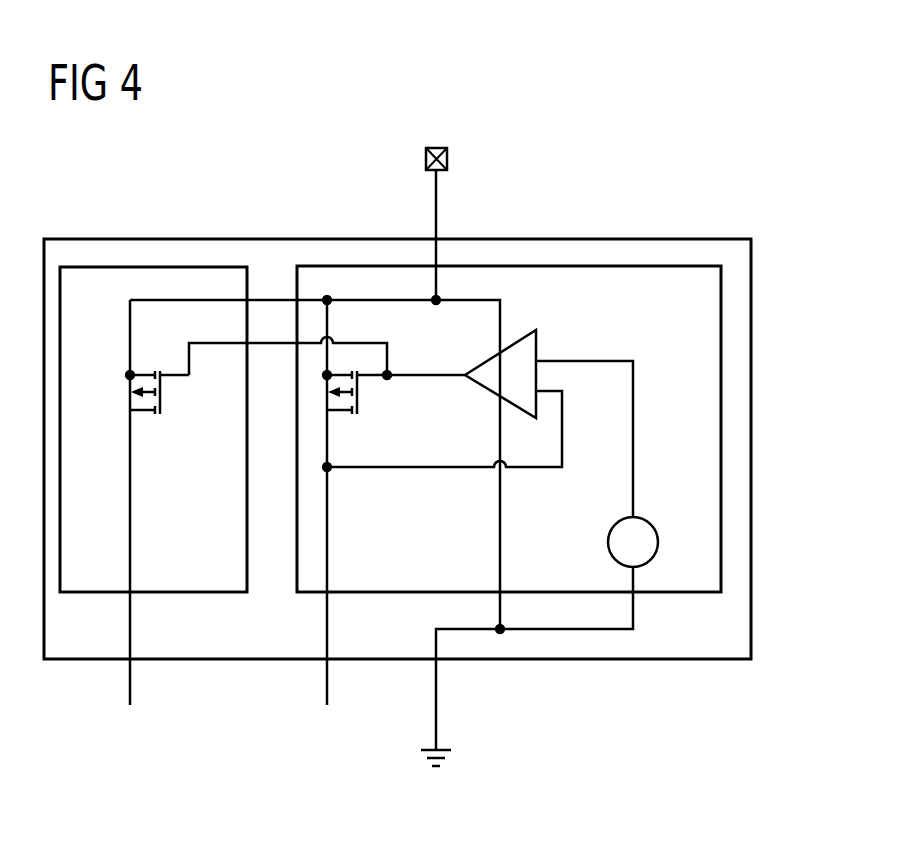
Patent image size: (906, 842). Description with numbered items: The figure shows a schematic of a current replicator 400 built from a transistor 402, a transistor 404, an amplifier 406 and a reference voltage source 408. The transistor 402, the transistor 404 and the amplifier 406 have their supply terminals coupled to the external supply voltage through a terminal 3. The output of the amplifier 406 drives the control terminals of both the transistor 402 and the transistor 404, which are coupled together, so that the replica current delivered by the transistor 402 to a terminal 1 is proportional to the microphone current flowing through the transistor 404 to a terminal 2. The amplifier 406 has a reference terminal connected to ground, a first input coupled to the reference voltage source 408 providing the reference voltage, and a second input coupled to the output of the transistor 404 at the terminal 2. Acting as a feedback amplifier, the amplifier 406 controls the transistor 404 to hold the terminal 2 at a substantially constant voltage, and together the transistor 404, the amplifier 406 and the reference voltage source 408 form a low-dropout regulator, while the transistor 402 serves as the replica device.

The current replicator 400 is at (399, 420).
The transistor 402 is at (161, 392).
The transistor 404 is at (358, 392).
The amplifier 406 is at (481, 359).
The reference voltage source 408 is at (607, 541).
The terminal 1 is at (143, 502).
The terminal 2 is at (340, 502).
The terminal 3 is at (449, 235).